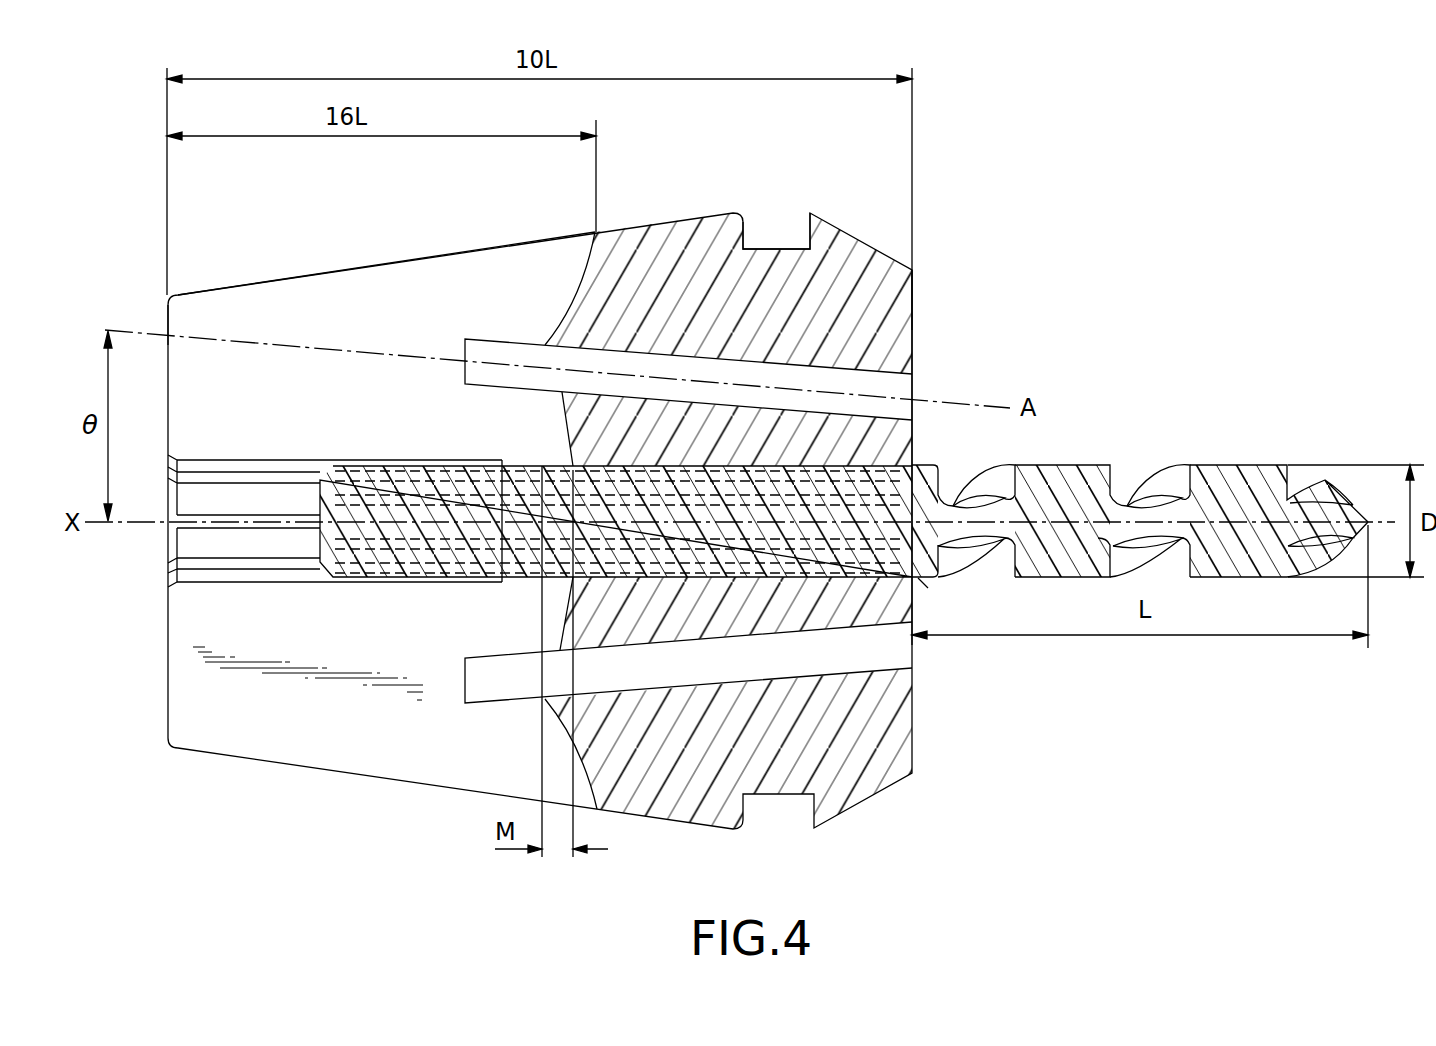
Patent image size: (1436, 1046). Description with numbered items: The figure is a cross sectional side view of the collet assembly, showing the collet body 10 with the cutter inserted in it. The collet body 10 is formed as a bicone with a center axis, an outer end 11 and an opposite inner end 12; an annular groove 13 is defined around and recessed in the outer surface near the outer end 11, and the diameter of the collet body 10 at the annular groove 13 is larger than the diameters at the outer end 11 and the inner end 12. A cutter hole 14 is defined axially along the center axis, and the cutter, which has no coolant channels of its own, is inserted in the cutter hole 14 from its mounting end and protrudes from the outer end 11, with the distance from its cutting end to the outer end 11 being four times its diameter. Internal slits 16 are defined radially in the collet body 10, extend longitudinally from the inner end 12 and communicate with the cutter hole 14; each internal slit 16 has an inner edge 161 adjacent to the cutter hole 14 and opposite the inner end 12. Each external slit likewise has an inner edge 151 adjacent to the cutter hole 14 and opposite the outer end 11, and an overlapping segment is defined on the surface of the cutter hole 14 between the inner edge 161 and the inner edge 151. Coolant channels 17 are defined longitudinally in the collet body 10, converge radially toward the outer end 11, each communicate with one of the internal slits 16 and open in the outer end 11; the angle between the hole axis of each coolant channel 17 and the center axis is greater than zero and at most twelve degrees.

The collet body 10 is at (451, 232).
The outer end 11 is at (913, 302).
The inner end 12 is at (165, 328).
The annular groove 13 is at (770, 248).
The cutter hole 14 is at (937, 598).
The internal slits 16 is at (355, 297).
The coolant channels 17 is at (898, 378).
The inner edge of external slit 151 is at (540, 472).
The inner edge of internal slit 161 is at (573, 470).